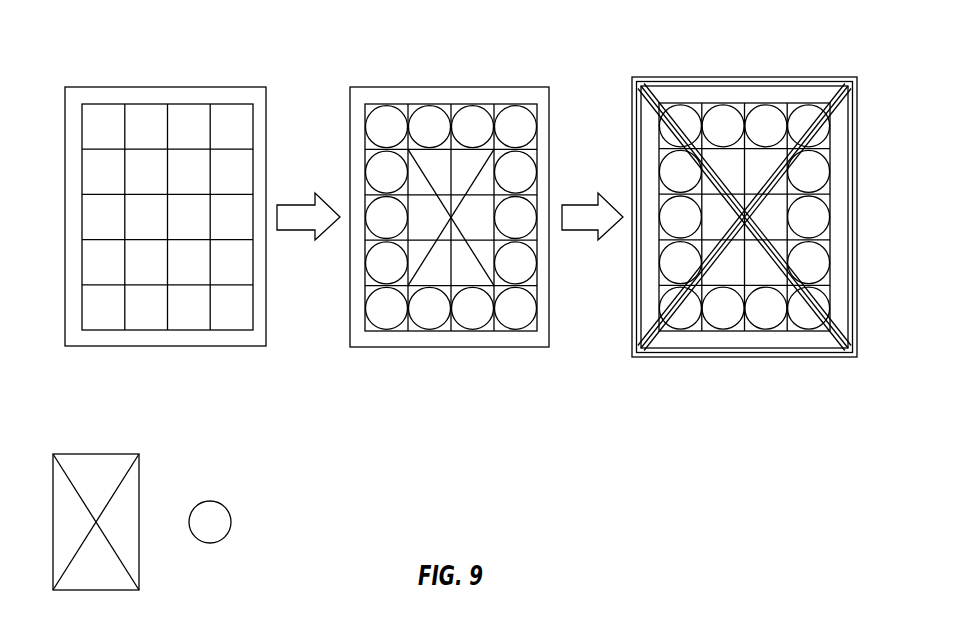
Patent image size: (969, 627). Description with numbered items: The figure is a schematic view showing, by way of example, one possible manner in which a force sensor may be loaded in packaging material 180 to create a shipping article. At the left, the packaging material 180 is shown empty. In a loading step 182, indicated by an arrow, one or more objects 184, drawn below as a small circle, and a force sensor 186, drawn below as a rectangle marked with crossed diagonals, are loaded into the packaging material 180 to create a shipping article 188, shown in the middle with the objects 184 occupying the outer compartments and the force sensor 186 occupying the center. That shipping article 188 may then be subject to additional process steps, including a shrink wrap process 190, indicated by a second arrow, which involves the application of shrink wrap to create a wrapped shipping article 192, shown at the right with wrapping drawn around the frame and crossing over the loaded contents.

The packaging material 180 is at (166, 347).
The loading step 182 is at (302, 233).
The object 184 is at (230, 515).
The force sensor 186 is at (140, 477).
The shipping article 188 is at (510, 55).
The shrink wrap process 190 is at (587, 233).
The wrapped shipping article 192 is at (781, 55).